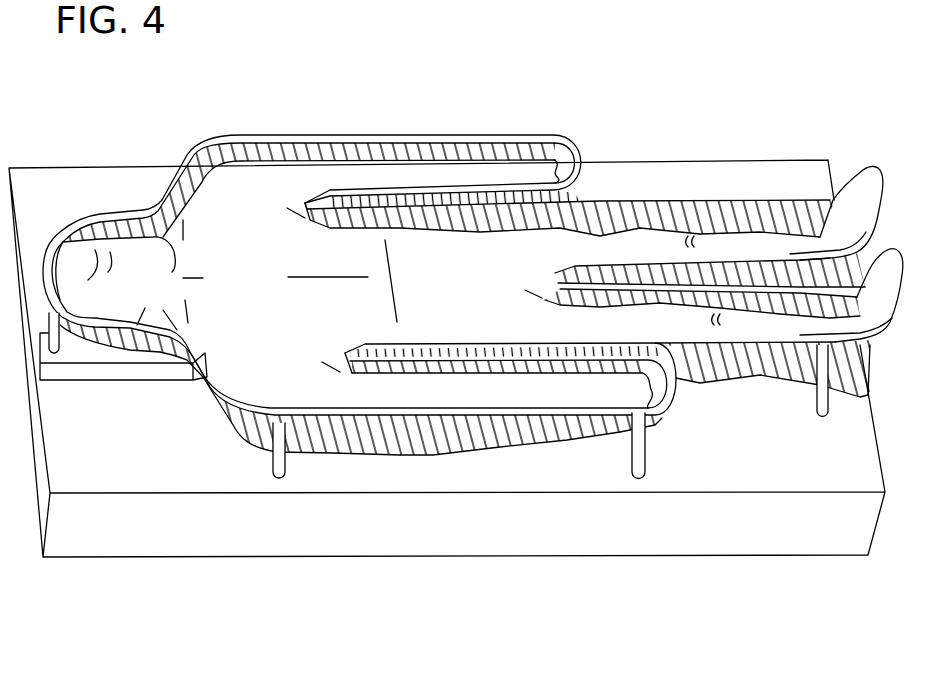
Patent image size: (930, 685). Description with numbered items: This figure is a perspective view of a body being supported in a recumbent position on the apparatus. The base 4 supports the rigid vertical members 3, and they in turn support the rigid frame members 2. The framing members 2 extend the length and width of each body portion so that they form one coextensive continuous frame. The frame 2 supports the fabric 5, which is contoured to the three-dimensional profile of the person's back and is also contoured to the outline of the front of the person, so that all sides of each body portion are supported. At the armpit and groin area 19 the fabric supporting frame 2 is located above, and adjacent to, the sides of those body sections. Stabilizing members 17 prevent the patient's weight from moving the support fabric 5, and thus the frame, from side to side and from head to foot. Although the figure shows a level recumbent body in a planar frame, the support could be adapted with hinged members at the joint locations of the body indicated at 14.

The rigid frame members 2 is at (187, 160).
The rigid vertical members 3 is at (272, 455).
The base 4 is at (712, 477).
The fabric 5 is at (465, 443).
The joint locations 14 is at (417, 192).
The stabilizing members 17 is at (107, 370).
The armpit and groin area 19 is at (555, 275).